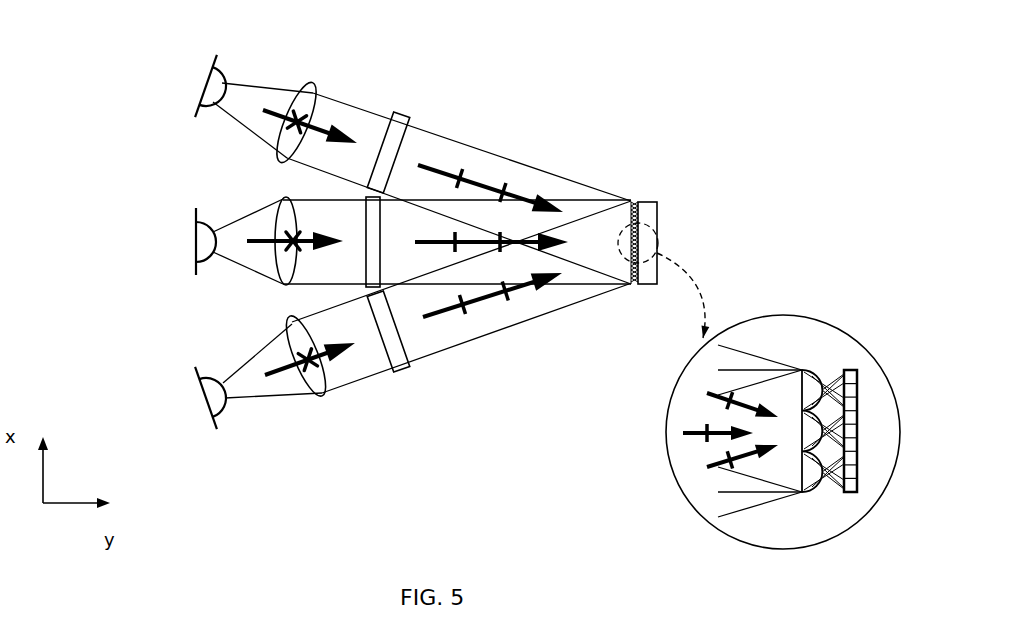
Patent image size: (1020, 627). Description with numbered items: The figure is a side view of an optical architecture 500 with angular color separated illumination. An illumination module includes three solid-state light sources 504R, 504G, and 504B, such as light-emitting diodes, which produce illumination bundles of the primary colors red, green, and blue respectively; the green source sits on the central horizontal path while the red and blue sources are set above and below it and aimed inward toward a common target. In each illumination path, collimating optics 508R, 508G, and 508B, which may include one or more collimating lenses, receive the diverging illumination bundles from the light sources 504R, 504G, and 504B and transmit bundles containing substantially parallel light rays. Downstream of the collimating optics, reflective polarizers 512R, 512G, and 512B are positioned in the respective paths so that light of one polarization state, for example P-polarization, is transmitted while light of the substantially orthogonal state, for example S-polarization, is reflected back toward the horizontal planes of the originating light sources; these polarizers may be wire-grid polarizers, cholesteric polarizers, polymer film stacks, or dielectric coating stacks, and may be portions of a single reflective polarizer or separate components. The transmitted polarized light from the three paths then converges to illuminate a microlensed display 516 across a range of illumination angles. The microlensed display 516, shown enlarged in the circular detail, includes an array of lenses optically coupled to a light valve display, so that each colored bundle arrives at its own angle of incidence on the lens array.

The optical architecture 500 is at (790, 67).
The solid-state light source 504R is at (193, 88).
The solid-state light source 504G is at (177, 238).
The solid-state light source 504B is at (192, 398).
The collimating optics 508R is at (317, 83).
The collimating optics 508G is at (283, 286).
The collimating optics 508B is at (322, 400).
The reflective polarizer 512R is at (410, 120).
The reflective polarizer 512G is at (366, 197).
The reflective polarizer 512B is at (405, 367).
The microlensed display 516 is at (655, 188).